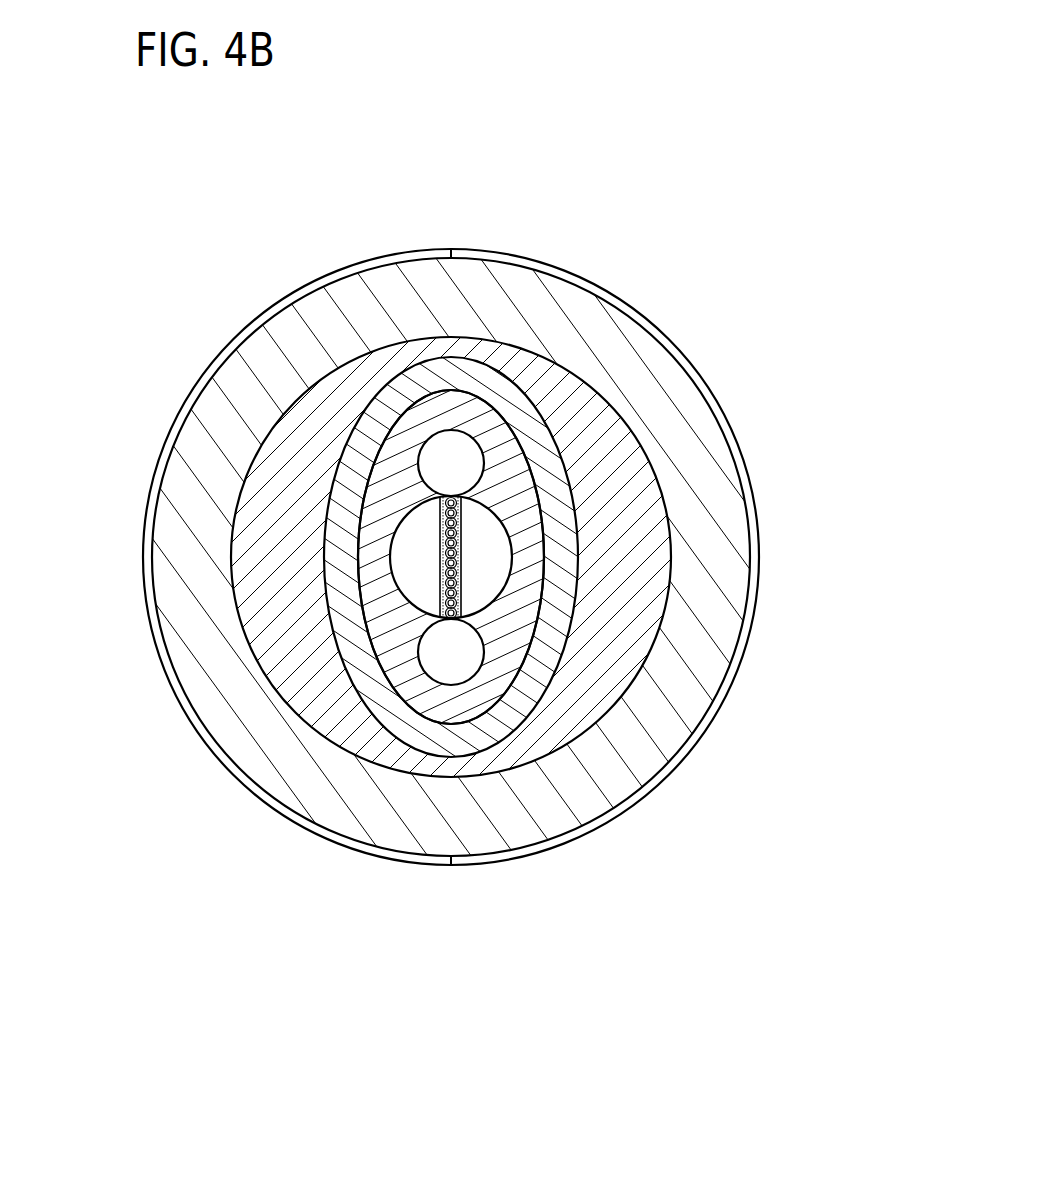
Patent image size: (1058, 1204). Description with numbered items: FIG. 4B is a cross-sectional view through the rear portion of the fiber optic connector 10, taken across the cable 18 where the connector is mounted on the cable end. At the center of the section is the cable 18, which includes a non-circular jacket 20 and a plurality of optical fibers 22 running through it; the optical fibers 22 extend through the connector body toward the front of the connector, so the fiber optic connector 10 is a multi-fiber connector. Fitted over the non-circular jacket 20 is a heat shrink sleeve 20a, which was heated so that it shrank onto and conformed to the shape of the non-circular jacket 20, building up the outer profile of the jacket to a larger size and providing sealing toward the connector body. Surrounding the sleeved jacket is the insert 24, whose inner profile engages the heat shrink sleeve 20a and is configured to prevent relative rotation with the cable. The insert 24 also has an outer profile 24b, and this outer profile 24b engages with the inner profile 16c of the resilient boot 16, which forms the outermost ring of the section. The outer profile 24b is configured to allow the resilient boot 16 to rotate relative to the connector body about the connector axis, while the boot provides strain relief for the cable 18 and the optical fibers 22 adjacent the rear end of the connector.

The fiber optic connector 10 is at (322, 956).
The resilient boot 16 is at (710, 575).
The inner profile of the resilient boot 16c is at (365, 357).
The cable 18 is at (518, 658).
The non-circular jacket 20 is at (395, 498).
The heat shrink sleeve 20a is at (473, 388).
The optical fiber 22 is at (443, 577).
The insert 24 is at (582, 443).
The outer profile of the insert 24b is at (573, 373).